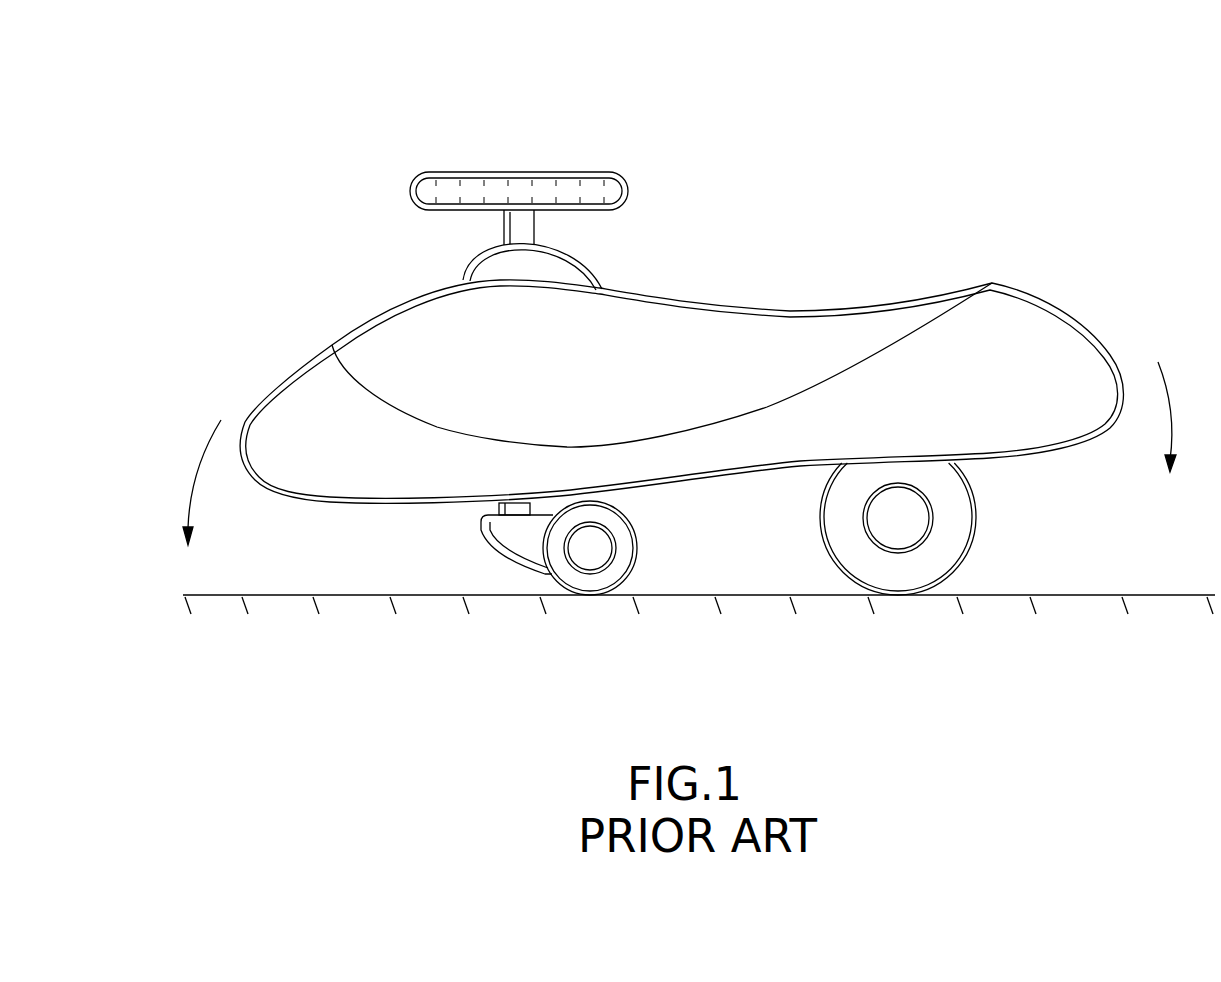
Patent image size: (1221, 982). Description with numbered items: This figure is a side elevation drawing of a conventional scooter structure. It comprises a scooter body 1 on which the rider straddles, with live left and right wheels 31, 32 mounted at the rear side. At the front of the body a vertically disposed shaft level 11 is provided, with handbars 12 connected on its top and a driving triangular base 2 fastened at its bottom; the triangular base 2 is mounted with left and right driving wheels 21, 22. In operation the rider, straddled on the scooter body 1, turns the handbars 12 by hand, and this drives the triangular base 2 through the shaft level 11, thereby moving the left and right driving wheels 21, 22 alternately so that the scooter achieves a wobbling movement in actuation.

The scooter body 1 is at (813, 330).
The shaft level 11 is at (507, 223).
The handbars 12 is at (568, 187).
The driving triangular base 2 is at (520, 540).
The left driving wheel 21 is at (652, 598).
The right driving wheel 22 is at (625, 548).
The left wheel 31 is at (980, 575).
The right wheel 32 is at (952, 530).